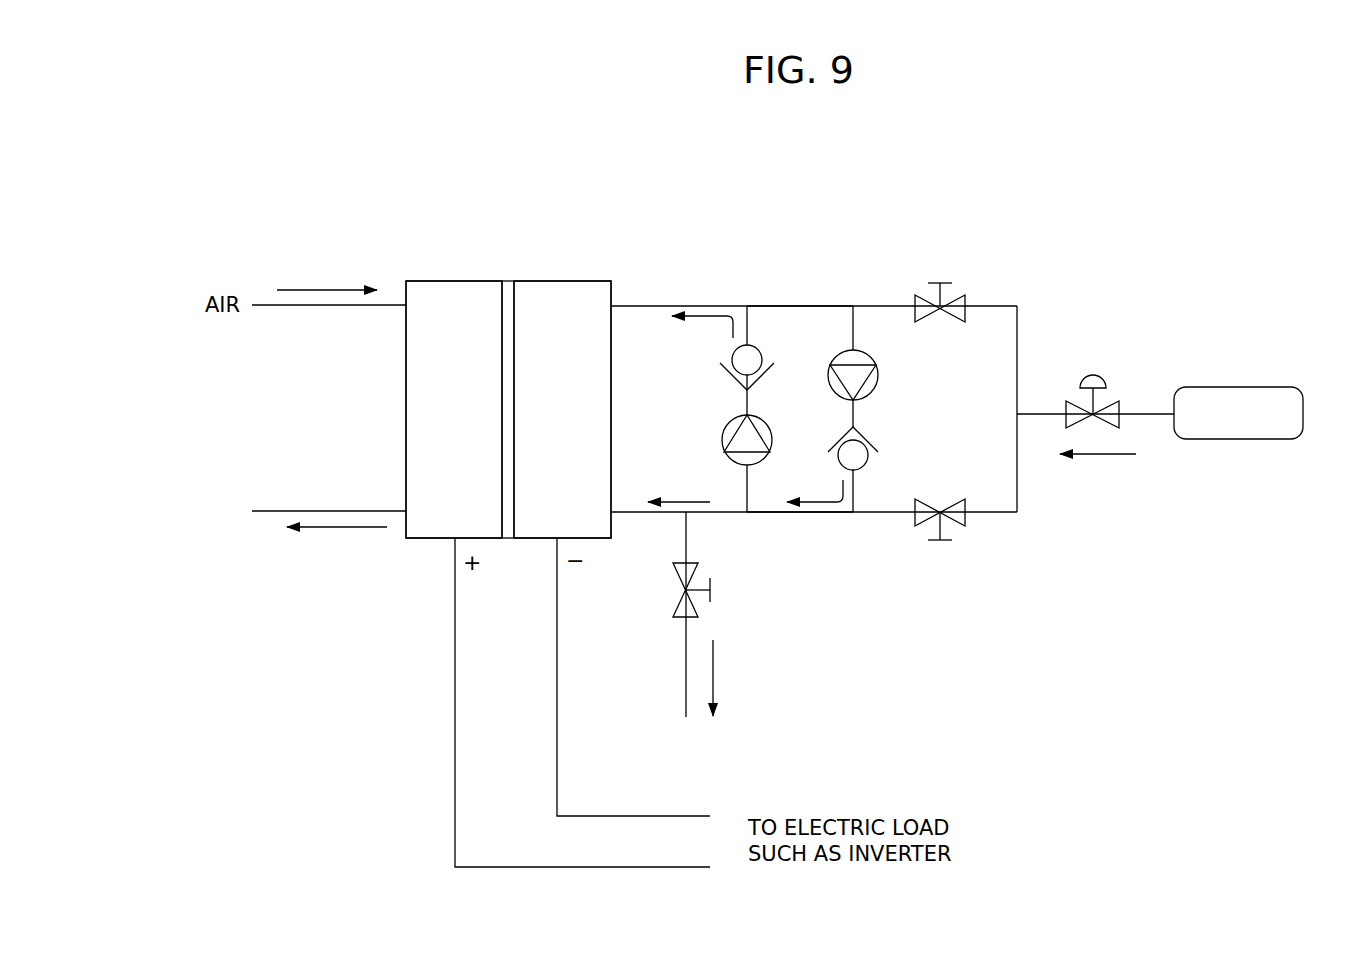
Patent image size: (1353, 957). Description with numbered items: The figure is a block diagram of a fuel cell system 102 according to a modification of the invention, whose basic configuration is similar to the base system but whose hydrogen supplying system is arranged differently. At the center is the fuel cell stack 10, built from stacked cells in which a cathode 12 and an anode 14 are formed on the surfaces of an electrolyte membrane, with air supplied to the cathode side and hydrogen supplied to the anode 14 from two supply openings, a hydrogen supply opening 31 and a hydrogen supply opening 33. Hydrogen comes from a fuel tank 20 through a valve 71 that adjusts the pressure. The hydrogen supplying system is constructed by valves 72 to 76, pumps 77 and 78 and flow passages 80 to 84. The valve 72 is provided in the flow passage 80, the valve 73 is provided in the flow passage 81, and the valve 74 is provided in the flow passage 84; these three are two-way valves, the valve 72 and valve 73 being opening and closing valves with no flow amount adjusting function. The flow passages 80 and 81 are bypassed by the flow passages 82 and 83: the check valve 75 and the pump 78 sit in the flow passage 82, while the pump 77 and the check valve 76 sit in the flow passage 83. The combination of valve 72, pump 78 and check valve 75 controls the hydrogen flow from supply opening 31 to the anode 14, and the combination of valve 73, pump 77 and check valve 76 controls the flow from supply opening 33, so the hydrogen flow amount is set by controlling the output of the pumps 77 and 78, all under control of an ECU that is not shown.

The fuel cell system 102 is at (820, 151).
The fuel cell stack 10 is at (510, 243).
The cathode 12 is at (445, 281).
The anode 14 is at (585, 281).
The fuel tank 20 is at (1236, 387).
The hydrogen supply opening 31 is at (618, 294).
The hydrogen supply opening 33 is at (616, 512).
The valve 71 is at (1098, 384).
The valve 72 is at (940, 282).
The valve 73 is at (932, 540).
The valve 74 is at (712, 580).
The check valve 75 is at (720, 375).
The check valve 76 is at (878, 438).
The pump 77 is at (878, 384).
The pump 78 is at (722, 452).
The flow passage 80 is at (800, 305).
The flow passage 81 is at (825, 513).
The flow passage 82 is at (747, 330).
The flow passage 83 is at (855, 327).
The flow passage 84 is at (684, 670).